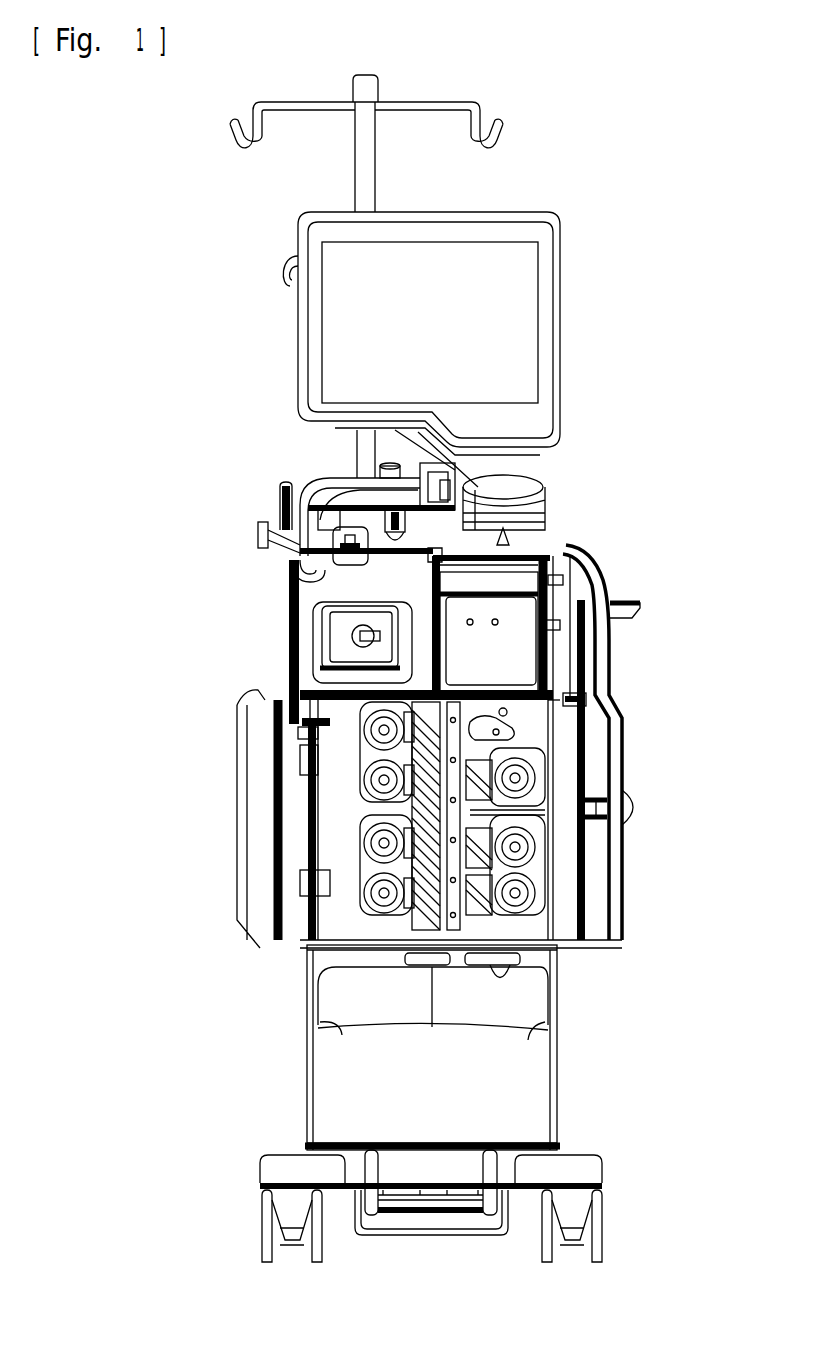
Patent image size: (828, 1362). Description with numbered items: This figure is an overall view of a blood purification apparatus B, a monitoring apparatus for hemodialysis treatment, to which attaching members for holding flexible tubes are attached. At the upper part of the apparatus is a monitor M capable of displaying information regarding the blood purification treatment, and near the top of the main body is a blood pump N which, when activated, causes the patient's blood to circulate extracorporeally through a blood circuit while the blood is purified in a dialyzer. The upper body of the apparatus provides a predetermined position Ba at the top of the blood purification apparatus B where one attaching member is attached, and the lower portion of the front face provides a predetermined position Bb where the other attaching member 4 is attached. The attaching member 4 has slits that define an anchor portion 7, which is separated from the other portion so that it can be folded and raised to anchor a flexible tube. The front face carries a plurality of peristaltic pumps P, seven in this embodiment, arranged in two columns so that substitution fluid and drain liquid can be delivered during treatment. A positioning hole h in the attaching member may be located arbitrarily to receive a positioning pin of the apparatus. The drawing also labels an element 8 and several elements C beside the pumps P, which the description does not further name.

The blood purification apparatus B is at (228, 375).
The predetermined position at the top Ba is at (360, 505).
The predetermined position on the front face Bb is at (600, 940).
The monitor M is at (543, 350).
The blood pump N is at (548, 498).
The anchor portion 7 is at (556, 678).
The hook 8 is at (587, 705).
The positioning hole h is at (556, 726).
The attaching member 4 is at (470, 1000).
The peristaltic pumps P is at (360, 735).
The clamp C is at (360, 706).